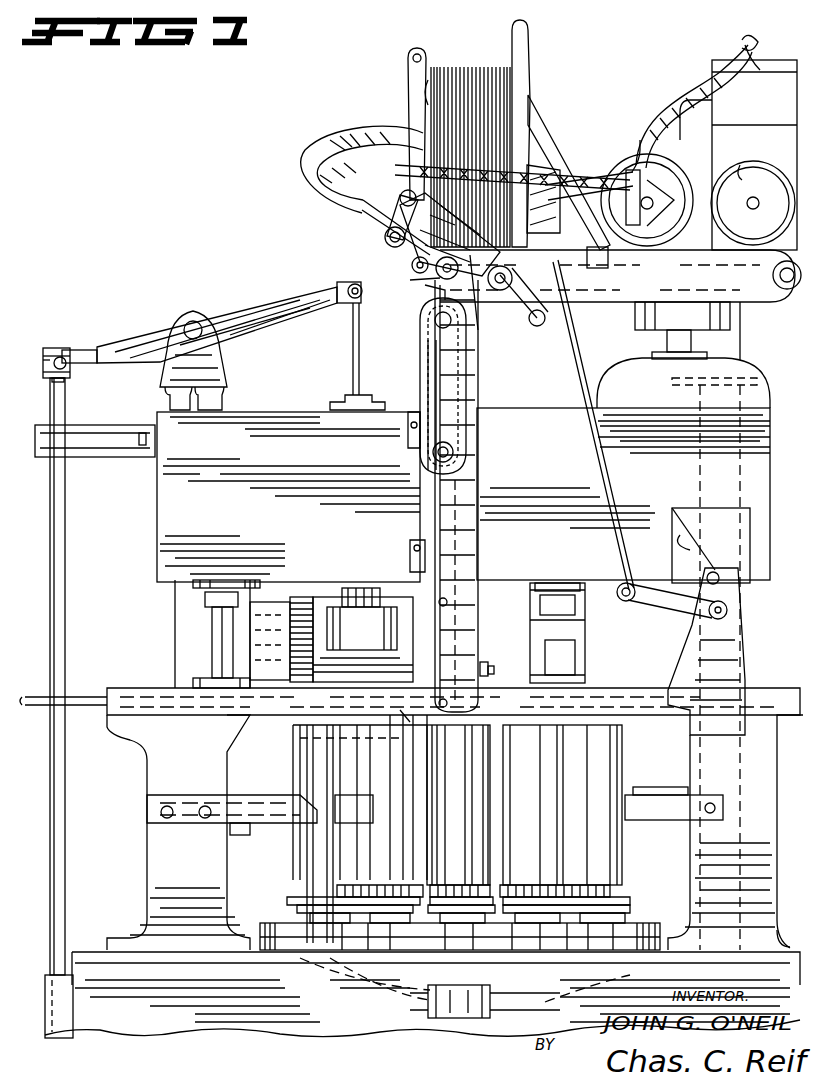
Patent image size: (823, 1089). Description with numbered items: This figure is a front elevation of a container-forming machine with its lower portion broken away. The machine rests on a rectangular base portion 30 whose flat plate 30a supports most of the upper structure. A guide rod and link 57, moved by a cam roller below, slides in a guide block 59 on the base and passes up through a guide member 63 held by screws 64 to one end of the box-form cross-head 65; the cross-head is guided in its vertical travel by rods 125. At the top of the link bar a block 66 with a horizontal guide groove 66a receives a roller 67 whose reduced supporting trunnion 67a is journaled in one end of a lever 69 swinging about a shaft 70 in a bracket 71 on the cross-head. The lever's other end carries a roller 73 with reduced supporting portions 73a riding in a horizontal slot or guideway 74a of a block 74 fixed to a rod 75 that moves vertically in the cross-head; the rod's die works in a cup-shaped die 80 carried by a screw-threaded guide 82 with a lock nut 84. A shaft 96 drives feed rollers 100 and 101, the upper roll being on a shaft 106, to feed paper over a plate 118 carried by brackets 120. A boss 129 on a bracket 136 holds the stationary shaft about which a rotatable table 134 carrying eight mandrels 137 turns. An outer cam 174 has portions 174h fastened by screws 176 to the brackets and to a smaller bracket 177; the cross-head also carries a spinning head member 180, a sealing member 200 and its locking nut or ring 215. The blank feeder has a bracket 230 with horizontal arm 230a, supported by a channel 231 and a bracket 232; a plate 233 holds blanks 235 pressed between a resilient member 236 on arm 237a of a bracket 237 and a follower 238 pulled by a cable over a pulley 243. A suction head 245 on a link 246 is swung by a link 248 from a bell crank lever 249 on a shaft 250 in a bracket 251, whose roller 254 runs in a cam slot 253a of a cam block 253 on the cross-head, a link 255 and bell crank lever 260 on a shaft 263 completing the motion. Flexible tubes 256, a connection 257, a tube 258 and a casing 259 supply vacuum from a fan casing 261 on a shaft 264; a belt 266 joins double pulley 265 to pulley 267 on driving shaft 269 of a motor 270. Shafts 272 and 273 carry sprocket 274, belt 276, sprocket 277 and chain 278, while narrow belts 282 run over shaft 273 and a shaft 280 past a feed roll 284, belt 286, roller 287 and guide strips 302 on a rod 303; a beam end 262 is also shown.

The base portion 30 is at (608, 964).
The flat plate 30a is at (785, 942).
The guide rod and link 57 is at (58, 632).
The guide block 59 is at (46, 985).
The guide member 63 is at (105, 457).
The screws 64 is at (141, 432).
The cross-head 65 is at (178, 522).
The block 66 is at (58, 348).
The horizontal guide groove 66a is at (44, 362).
The roller 67 is at (66, 358).
The reduced supporting trunnion 67a is at (48, 380).
The lever 69 is at (140, 340).
The shaft 70 is at (193, 322).
The bracket 71 is at (212, 370).
The roller 73 is at (353, 280).
The reduced supporting portions 73a is at (352, 304).
The block 74 is at (340, 285).
The horizontal slot or guideway 74a is at (436, 296).
The rod 75 is at (361, 352).
The cup-shaped die 80 is at (365, 668).
The screw-threaded guide 82 is at (325, 598).
The lock nut 84 is at (372, 600).
The shaft 96 is at (43, 699).
The feed roller 100 is at (288, 686).
The feed roller 101 is at (300, 606).
The shaft 106 is at (245, 642).
The plate 118 is at (412, 706).
The brackets 120 is at (146, 860).
The rods 125 is at (215, 640).
The boss 129 is at (450, 1018).
The rotatable table 134 is at (640, 920).
The bracket 136 is at (530, 996).
The mandrels 137 is at (612, 760).
The outer cam 174 is at (258, 795).
The portions 174h is at (233, 828).
The screws 176 is at (170, 820).
The smaller bracket 177 is at (330, 862).
The member 180 is at (492, 674).
The member 200 is at (587, 660).
The locking nut or ring 215 is at (535, 592).
The bracket 230 is at (432, 305).
The rearwardly horizontally extending arm 230a is at (598, 308).
The channel 231 is at (742, 402).
The bracket 232 is at (745, 348).
The plate 233 is at (540, 128).
The blanks 235 is at (493, 72).
The resilient member 236 is at (430, 85).
The bracket 237 is at (397, 203).
The upwardly extending arm 237a is at (410, 86).
The follower 238 is at (546, 148).
The pulley 243 is at (412, 280).
The suction head 245 is at (355, 215).
The link 246 is at (372, 205).
The link 248 is at (596, 476).
The bell crank lever 249 is at (668, 606).
The shaft 250 is at (727, 610).
The bracket 251 is at (675, 682).
The cam block 253 is at (735, 520).
The cam slot 253a is at (680, 520).
The roller 254 is at (718, 575).
The link 255 is at (398, 145).
The flexible tubes 256 is at (590, 155).
The connection 257 is at (640, 165).
The tube 258 is at (672, 94).
The casing 259 is at (787, 62).
The bell crank lever 260 is at (562, 296).
The casing 261 is at (622, 168).
The beam pivot 262 is at (775, 268).
The shaft 263 is at (480, 322).
The shaft 264 is at (660, 168).
The double pulley 265 is at (670, 203).
The belt 266 is at (718, 140).
The pulley 267 is at (770, 165).
The driving shaft 269 is at (755, 208).
The motor 270 is at (742, 162).
The shaft 272 is at (455, 326).
The shaft 273 is at (462, 425).
The sprocket 274 is at (492, 288).
The belt 276 is at (548, 230).
The sprocket 277 is at (465, 450).
The chain 278 is at (450, 386).
The shaft 280 is at (468, 703).
The narrow belts 282 is at (462, 536).
The feed roll 284 is at (452, 270).
The belt 286 is at (430, 356).
The roller 287 is at (412, 262).
The guide strips 302 is at (412, 560).
The rod 303 is at (412, 540).